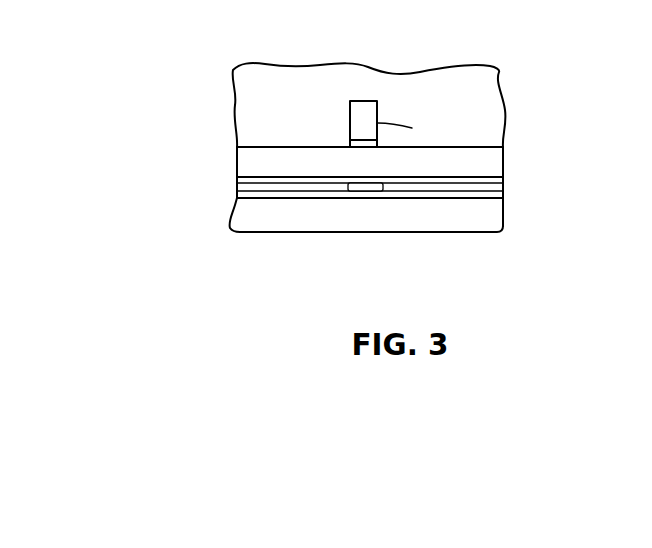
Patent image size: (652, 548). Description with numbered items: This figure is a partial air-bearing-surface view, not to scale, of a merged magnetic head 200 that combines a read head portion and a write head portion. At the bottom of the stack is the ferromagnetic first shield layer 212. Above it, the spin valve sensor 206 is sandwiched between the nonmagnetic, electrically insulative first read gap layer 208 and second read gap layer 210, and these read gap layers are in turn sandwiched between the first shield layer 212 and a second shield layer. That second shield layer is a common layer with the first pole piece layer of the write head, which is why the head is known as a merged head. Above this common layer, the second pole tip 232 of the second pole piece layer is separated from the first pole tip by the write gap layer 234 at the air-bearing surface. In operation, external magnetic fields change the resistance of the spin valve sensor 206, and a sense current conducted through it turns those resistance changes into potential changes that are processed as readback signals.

The merged magnetic head 200 is at (536, 75).
The second read gap layer 210 is at (472, 182).
The first read gap layer 208 is at (287, 199).
The spin valve sensor 206 is at (366, 192).
The first shield layer 212 is at (491, 217).
The second pole tip 232 is at (366, 116).
The write gap layer 234 is at (364, 140).